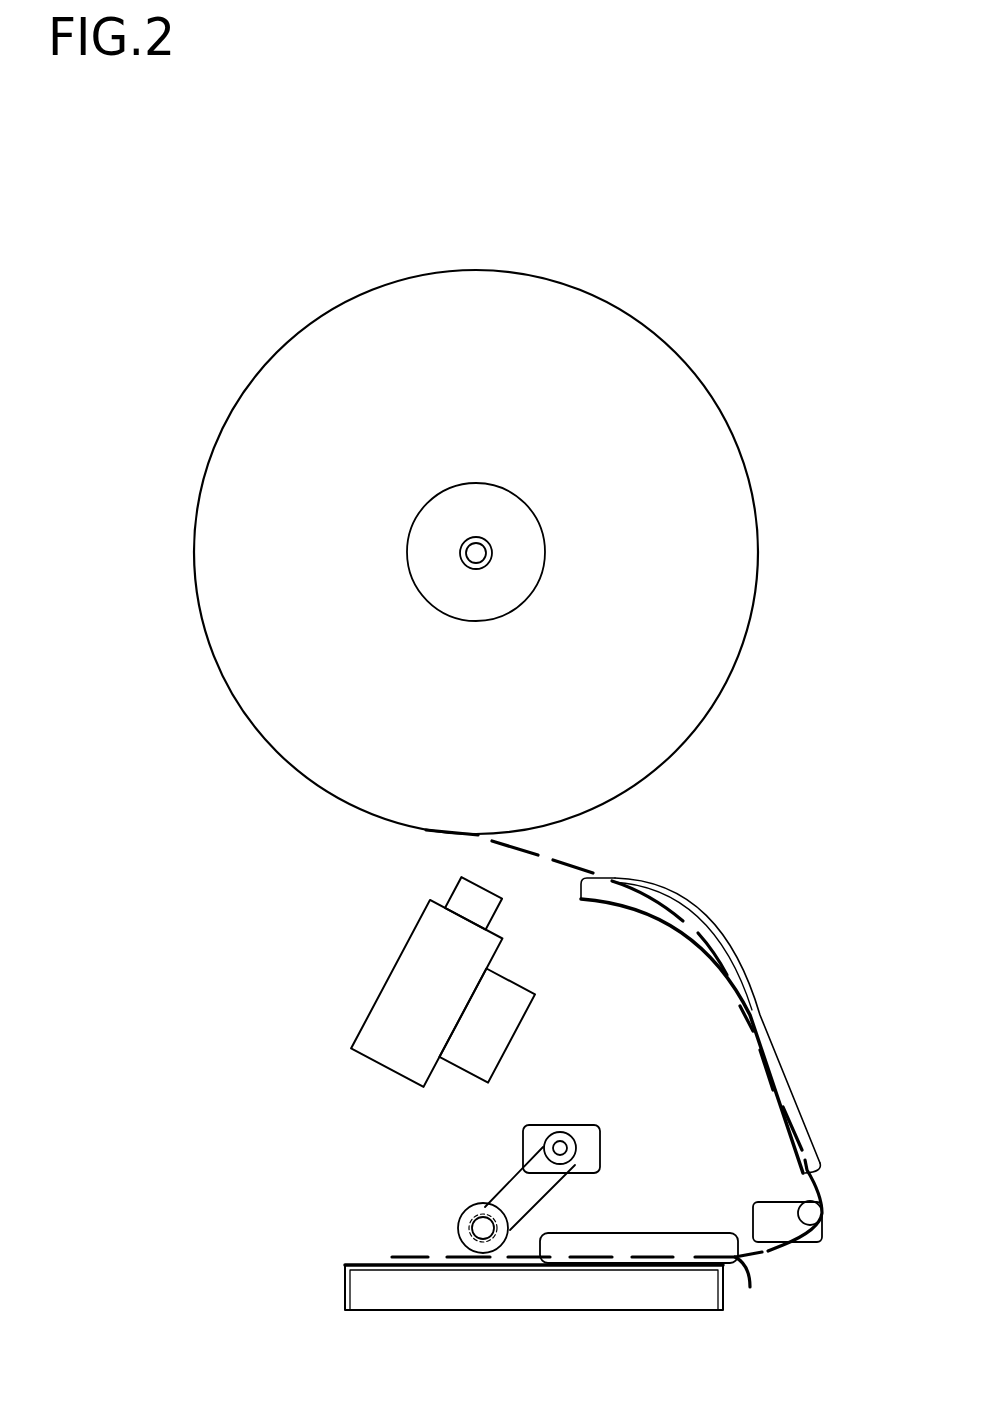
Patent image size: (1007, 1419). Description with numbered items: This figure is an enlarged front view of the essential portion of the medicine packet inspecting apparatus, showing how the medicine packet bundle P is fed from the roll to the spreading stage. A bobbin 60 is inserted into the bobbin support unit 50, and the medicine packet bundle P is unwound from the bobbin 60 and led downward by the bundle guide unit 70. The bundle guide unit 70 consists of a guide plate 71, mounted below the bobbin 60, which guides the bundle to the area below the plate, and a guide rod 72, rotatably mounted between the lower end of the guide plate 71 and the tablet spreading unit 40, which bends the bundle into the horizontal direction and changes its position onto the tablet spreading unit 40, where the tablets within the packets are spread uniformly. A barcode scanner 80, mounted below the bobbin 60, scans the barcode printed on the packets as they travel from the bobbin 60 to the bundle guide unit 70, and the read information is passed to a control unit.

The tablet spreading unit 40 is at (623, 1270).
The bobbin support unit 50 is at (492, 553).
The bobbin 60 is at (703, 693).
The bundle guide unit 70 is at (803, 1060).
The guide plate 71 is at (720, 970).
The guide rod 72 is at (805, 1213).
The barcode scanner 80 is at (452, 895).
The paper P is at (815, 1182).